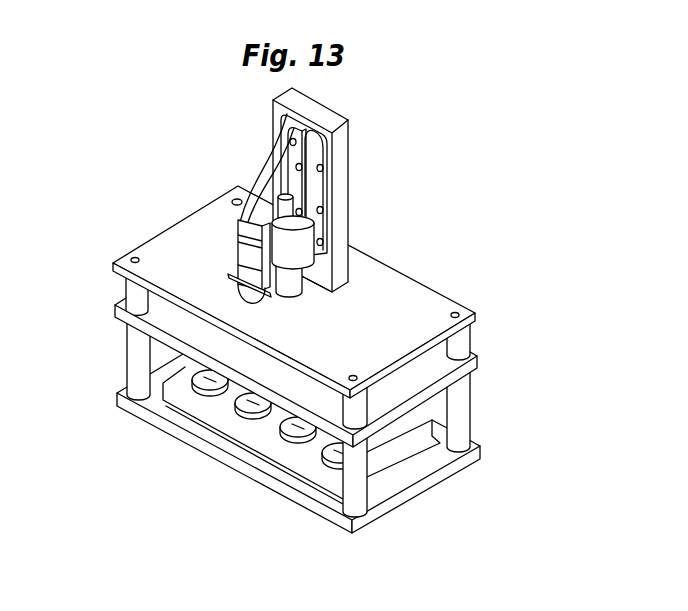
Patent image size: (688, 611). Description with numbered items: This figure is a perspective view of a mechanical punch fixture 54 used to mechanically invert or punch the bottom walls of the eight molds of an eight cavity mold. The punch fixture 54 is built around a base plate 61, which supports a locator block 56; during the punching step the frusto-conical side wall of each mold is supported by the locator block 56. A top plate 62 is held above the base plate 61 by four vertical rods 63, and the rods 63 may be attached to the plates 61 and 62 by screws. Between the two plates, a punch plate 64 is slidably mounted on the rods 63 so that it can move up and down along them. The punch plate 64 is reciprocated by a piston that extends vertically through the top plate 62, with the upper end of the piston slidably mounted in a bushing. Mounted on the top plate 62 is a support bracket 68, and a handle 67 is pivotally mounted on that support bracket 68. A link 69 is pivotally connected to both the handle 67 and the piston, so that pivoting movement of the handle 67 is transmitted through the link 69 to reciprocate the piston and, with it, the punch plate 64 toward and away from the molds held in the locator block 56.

The punch fixture 54 is at (410, 272).
The locator block 56 is at (275, 452).
The base plate 61 is at (440, 480).
The top plate 62 is at (420, 304).
The vertical rods 63 is at (473, 408).
The punch plate 64 is at (178, 321).
The handle 67 is at (240, 262).
The support bracket 68 is at (342, 140).
The link 69 is at (301, 191).